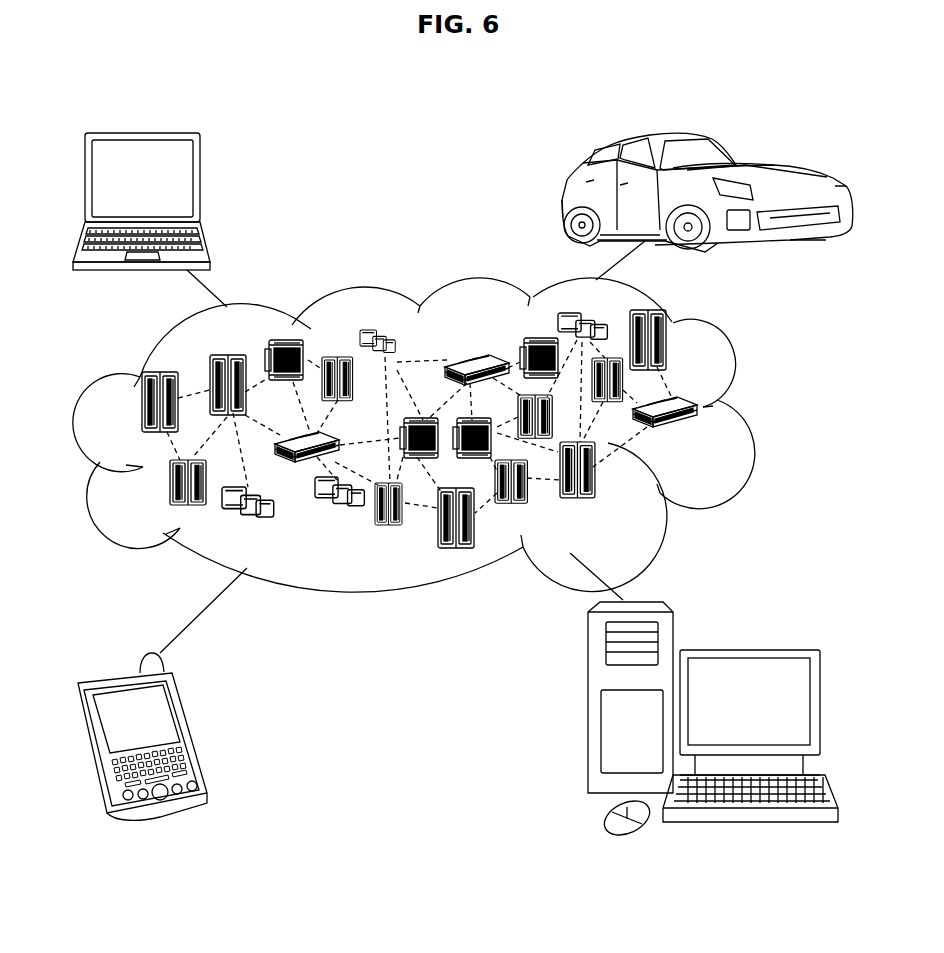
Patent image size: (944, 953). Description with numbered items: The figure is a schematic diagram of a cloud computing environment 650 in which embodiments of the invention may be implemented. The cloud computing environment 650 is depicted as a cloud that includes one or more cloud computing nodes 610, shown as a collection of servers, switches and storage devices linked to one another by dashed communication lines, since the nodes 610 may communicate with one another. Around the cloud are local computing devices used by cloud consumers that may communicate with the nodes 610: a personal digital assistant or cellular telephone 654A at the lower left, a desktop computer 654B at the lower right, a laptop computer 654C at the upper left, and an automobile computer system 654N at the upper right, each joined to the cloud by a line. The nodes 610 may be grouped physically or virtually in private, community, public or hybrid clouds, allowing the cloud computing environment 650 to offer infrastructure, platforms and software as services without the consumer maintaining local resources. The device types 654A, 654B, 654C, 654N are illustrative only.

The cloud computing nodes 610 is at (704, 438).
The cloud computing environment 650 is at (746, 416).
The personal digital assistant (PDA) or cellular telephone 654A is at (193, 727).
The desktop computer 654B is at (747, 650).
The laptop computer 654C is at (203, 183).
The automobile computer system 654N is at (563, 200).